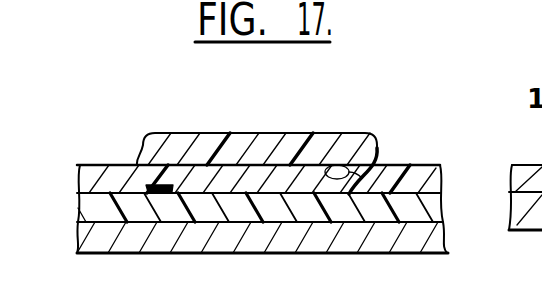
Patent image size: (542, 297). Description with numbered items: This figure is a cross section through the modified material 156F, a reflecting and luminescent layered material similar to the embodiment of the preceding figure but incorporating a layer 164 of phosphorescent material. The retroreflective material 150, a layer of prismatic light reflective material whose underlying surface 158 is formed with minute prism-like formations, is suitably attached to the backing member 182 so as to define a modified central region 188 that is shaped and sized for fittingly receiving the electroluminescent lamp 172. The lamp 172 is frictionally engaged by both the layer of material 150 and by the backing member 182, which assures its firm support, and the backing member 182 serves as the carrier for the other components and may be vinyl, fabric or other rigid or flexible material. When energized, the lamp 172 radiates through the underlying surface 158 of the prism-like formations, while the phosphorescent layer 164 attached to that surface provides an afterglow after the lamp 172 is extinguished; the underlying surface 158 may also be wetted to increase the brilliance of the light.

The retroreflective material 150 is at (224, 132).
The modified material 156F is at (372, 124).
The underlying surface 158 is at (387, 163).
The layer of phosphorescent material 164 is at (443, 205).
The electroluminescent lamp 172 is at (276, 182).
The backing member 182 is at (161, 239).
The modified central region 188 is at (135, 173).